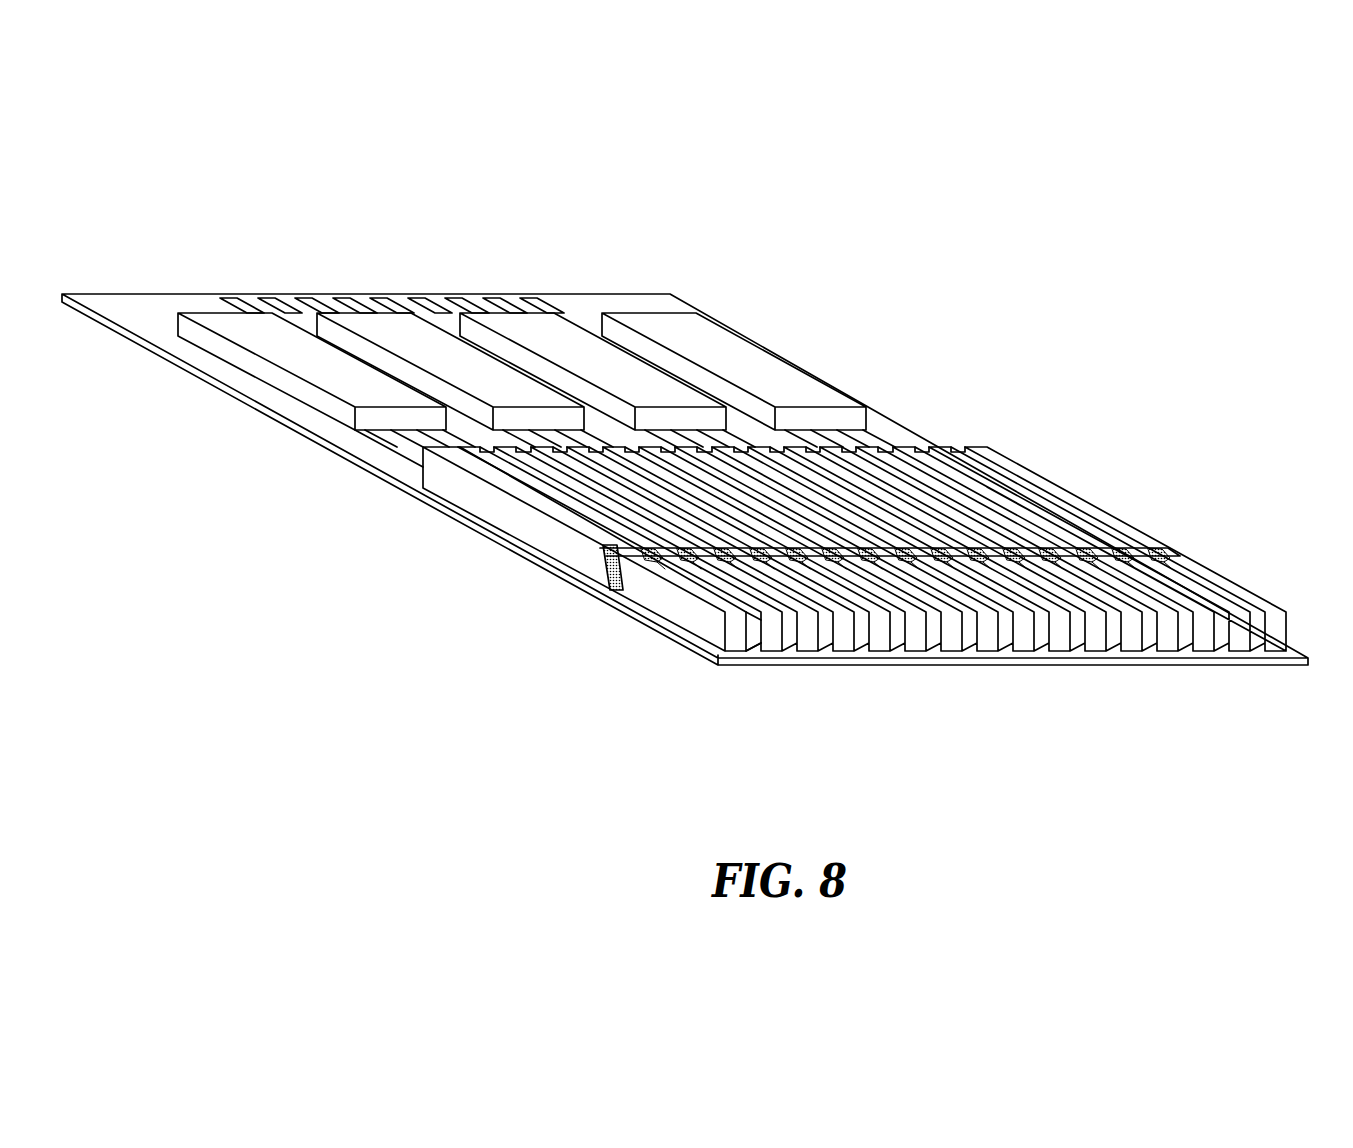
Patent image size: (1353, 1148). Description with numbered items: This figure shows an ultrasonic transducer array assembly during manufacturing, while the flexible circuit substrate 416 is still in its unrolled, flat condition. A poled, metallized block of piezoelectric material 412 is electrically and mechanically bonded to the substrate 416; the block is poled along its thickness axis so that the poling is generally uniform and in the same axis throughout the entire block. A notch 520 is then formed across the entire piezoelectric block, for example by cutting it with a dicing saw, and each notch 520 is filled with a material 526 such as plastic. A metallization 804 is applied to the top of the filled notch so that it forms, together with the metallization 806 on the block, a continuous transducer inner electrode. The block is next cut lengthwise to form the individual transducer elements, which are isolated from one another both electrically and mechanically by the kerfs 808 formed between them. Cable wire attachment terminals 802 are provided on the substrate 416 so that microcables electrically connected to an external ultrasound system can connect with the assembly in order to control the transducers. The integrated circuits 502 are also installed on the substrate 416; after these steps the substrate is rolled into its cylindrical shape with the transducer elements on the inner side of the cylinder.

The flexible circuit substrate 416 is at (938, 665).
The cable wire attachment terminals 802 is at (362, 296).
The integrated circuits 502 is at (252, 363).
The piezoelectric material 412 is at (507, 508).
The metallization 806 is at (702, 595).
The kerfs 808 is at (753, 628).
The metallization 804 is at (1168, 548).
The notch 520 is at (603, 550).
The material 526 is at (602, 557).